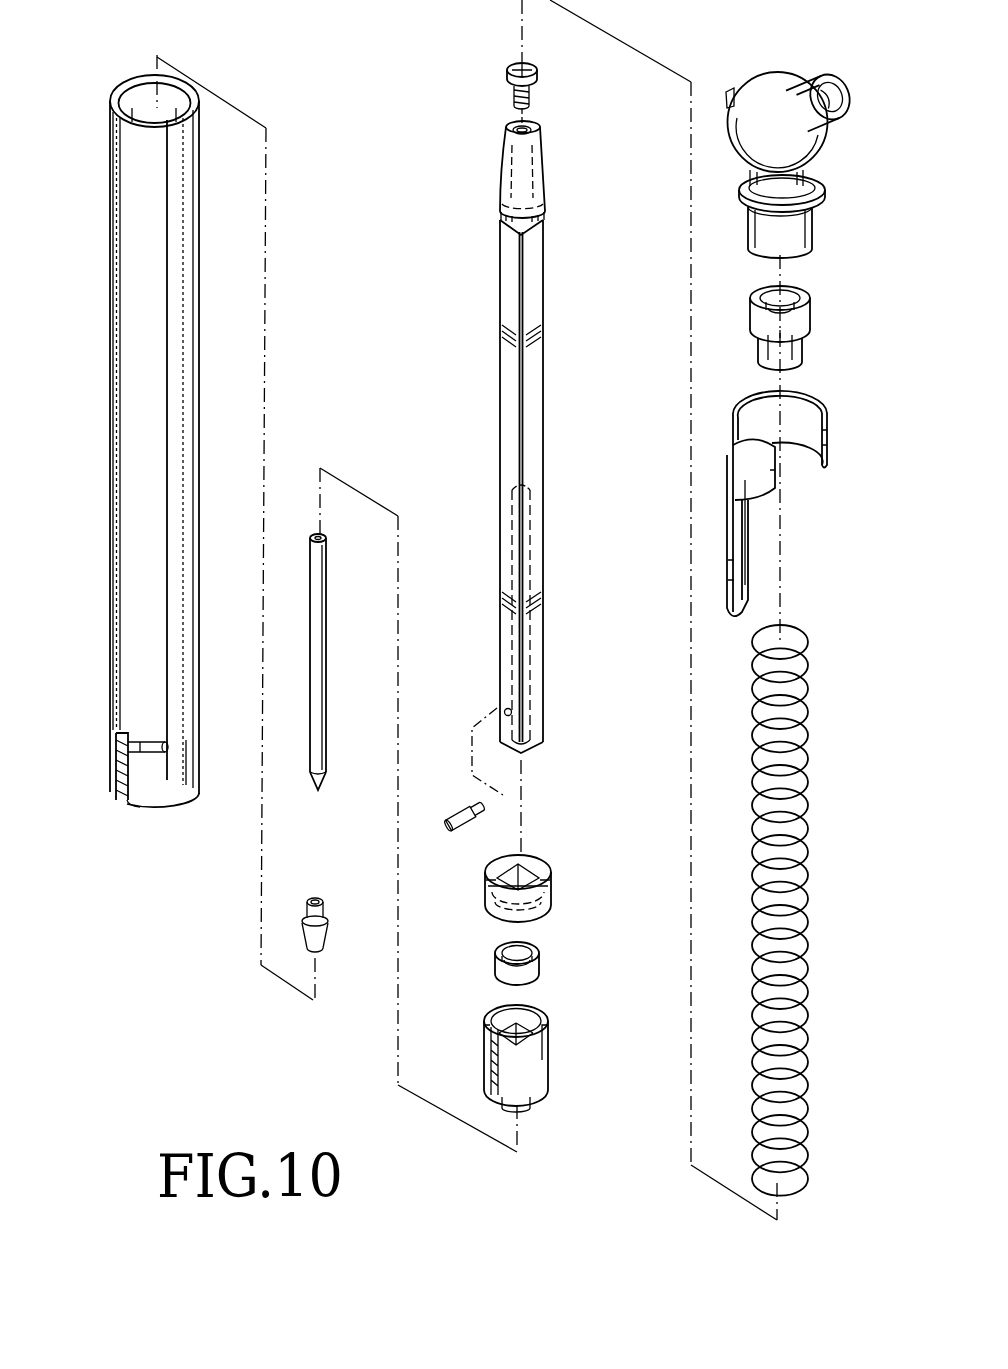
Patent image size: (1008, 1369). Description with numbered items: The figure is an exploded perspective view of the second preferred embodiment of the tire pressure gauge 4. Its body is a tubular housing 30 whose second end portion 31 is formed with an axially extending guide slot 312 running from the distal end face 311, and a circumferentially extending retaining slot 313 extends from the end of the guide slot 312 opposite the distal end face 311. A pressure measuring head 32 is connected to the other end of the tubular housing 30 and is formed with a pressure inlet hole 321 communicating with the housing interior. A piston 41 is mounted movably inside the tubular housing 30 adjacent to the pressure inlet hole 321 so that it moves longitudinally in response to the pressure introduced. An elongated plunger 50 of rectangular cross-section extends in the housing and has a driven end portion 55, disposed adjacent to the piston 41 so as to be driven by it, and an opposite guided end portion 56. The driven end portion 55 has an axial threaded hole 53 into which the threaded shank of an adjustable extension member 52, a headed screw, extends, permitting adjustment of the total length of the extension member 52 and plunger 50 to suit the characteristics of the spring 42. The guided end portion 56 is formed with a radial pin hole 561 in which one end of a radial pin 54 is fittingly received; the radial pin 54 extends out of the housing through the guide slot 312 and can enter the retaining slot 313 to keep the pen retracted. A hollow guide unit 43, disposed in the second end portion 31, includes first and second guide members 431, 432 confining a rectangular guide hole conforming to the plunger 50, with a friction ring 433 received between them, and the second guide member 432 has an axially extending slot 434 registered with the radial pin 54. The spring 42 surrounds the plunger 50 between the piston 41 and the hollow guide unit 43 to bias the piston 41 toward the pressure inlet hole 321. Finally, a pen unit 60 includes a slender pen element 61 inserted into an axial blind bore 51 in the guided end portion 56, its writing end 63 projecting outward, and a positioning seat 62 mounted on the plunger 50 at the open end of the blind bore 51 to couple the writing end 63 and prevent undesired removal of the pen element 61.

The tire pressure gauge 4 is at (464, 162).
The tubular housing 30 is at (118, 393).
The second end portion 31 is at (180, 782).
The distal end face 311 is at (155, 808).
The guide slot 312 is at (125, 766).
The retaining slot 313 is at (147, 740).
The pressure measuring head 32 is at (766, 78).
The pressure inlet hole 321 is at (836, 80).
The piston 41 is at (795, 350).
The spring 42 is at (750, 906).
The hollow guide unit 43 is at (563, 918).
The first guide member 431 is at (485, 893).
The second guide member 432 is at (484, 1040).
The friction ring 433 is at (497, 968).
The axially extending slot 434 is at (490, 1063).
The elongated plunger 50 is at (545, 298).
The axial blind bore 51 is at (527, 552).
The adjustable extension member 52 is at (532, 94).
The axial threaded hole 53 is at (530, 128).
The radial pin 54 is at (460, 814).
The driven end portion 55 is at (535, 205).
The guided end portion 56 is at (540, 720).
The radial pin hole 561 is at (506, 710).
The pen unit 60 is at (332, 736).
The pen element 61 is at (322, 683).
The positioning seat 62 is at (322, 950).
The writing end 63 is at (322, 793).